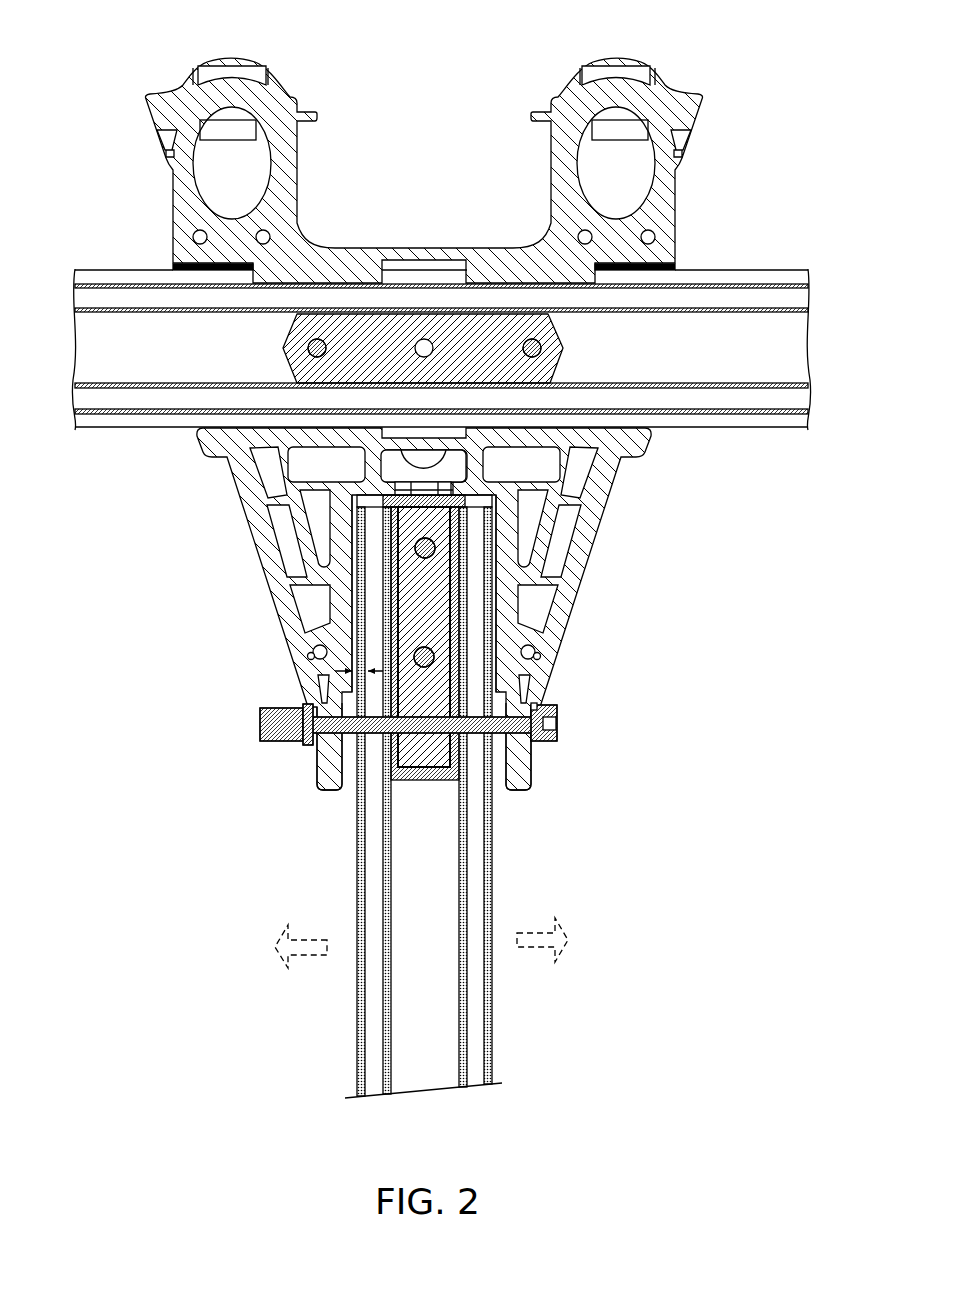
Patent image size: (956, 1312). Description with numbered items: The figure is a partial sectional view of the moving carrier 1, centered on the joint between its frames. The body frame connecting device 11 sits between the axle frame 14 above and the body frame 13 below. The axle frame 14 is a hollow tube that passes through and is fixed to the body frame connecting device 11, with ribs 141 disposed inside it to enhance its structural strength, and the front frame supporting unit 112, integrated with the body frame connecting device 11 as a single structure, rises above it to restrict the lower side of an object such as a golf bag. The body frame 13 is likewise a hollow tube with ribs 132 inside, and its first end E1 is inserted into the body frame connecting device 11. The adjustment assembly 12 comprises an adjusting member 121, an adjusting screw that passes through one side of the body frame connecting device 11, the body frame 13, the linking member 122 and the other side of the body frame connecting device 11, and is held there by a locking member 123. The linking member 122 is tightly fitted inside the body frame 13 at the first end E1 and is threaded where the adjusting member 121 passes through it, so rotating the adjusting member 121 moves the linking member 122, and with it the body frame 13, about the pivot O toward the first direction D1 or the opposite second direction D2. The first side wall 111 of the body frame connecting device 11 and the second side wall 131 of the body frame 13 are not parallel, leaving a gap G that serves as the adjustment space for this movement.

The moving carrier 1 is at (118, 39).
The body frame connecting device 11 is at (598, 472).
The first side wall 111 is at (352, 642).
The front frame supporting unit 112 is at (703, 110).
The adjustment assembly 12 is at (563, 707).
The adjusting member 121 is at (545, 723).
The linking member 122 is at (442, 600).
The locking member 123 is at (268, 740).
The body frame 13 is at (487, 887).
The second side wall 131 is at (353, 622).
The ribs 132 is at (388, 863).
The axle frame 14 is at (740, 272).
The ribs 141 is at (750, 388).
The first end E1 is at (358, 492).
The pivot O is at (432, 548).
The gap G is at (347, 673).
The first direction D1 is at (301, 943).
The second direction D2 is at (542, 936).